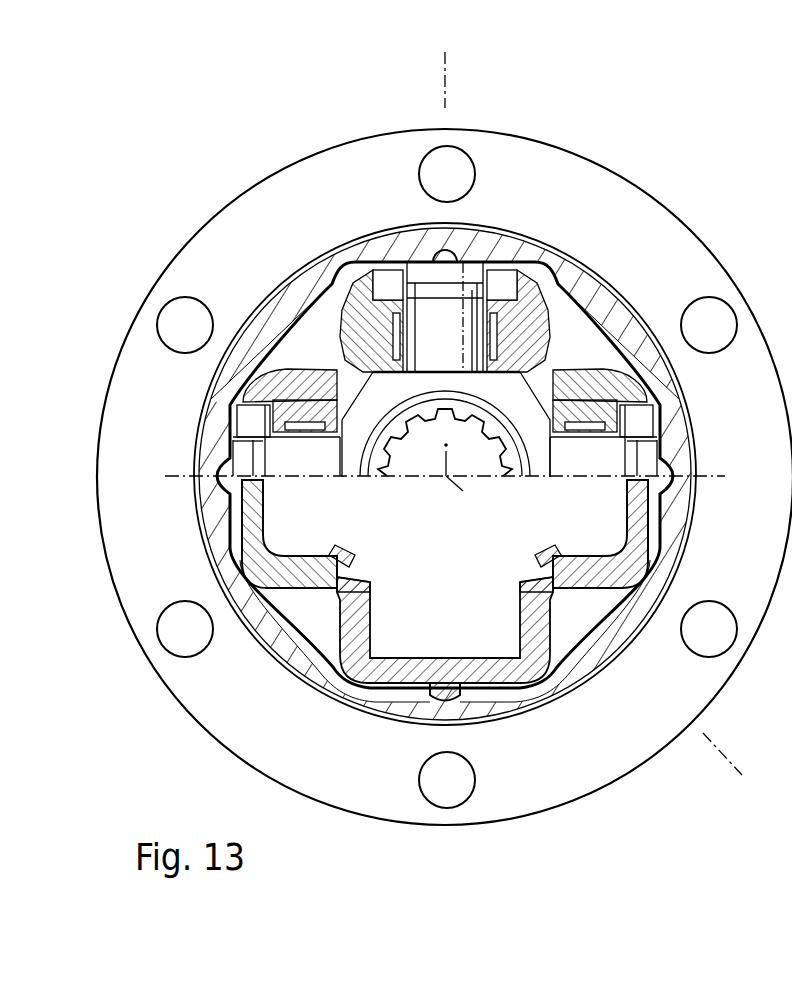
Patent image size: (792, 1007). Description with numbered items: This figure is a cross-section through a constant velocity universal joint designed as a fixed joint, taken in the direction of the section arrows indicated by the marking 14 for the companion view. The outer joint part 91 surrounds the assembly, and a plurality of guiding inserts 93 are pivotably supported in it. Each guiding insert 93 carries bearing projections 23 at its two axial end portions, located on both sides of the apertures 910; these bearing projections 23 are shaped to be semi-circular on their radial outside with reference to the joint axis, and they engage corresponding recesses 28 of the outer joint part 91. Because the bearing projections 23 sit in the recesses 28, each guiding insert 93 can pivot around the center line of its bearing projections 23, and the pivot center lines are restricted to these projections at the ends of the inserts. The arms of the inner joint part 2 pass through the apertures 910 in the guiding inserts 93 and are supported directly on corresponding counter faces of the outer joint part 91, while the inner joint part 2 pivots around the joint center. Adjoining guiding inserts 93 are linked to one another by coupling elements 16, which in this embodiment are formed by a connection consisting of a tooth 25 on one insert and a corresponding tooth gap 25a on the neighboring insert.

The outer joint part 91 is at (563, 270).
The coupling elements 16 is at (458, 474).
The guiding inserts 93 is at (287, 387).
The apertures 910 is at (655, 420).
The inner joint part 2 is at (352, 460).
The tooth gap 25a is at (557, 572).
The tooth 25 is at (520, 593).
The bearing projections 23 is at (433, 692).
The recesses 28 is at (456, 712).
The section line 14 is at (432, 76).